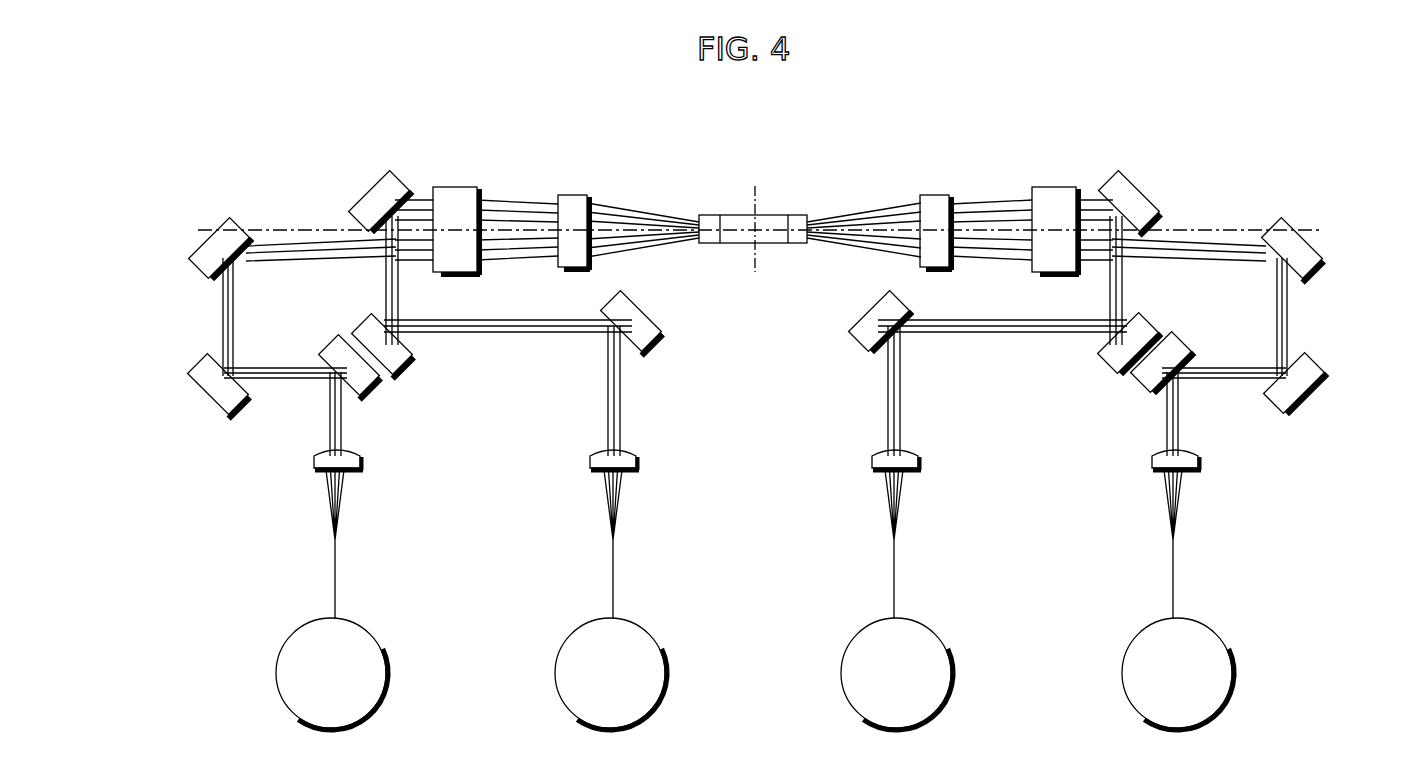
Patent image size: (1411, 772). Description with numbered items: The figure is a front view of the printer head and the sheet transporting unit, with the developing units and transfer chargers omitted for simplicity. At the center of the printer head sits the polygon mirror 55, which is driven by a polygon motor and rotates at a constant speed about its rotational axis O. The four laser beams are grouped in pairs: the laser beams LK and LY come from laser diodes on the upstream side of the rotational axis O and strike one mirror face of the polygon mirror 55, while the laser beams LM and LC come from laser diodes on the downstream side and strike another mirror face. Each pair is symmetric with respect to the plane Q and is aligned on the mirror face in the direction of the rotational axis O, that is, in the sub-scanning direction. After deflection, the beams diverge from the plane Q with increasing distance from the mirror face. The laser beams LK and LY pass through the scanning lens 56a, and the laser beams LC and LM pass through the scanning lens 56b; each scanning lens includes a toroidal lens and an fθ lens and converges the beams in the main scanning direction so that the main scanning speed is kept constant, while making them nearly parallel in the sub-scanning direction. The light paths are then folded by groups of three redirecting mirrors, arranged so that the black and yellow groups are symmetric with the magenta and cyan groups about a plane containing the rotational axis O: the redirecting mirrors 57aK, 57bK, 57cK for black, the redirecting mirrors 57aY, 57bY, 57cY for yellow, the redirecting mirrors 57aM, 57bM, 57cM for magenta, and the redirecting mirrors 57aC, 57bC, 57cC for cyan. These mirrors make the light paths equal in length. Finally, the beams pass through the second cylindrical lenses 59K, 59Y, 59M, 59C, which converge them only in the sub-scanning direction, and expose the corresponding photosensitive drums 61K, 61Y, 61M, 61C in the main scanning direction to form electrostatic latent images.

The polygon mirror 55 is at (773, 212).
The rotational axis O is at (754, 201).
The plane Q is at (281, 232).
The scanning lens 56a is at (1046, 186).
The scanning lens 56b is at (570, 194).
The redirecting mirror 57aM is at (366, 190).
The redirecting mirror 57aC is at (212, 273).
The redirecting mirror 57bC is at (207, 388).
The redirecting mirror 57cC is at (330, 352).
The redirecting mirror 57bM is at (390, 362).
The redirecting mirror 57cM is at (650, 346).
The redirecting mirror 57cY is at (856, 342).
The redirecting mirror 57aY is at (1146, 199).
The redirecting mirror 57bY is at (1114, 358).
The redirecting mirror 57aK is at (1313, 268).
The redirecting mirror 57bK is at (1313, 394).
The redirecting mirror 57cK is at (1183, 347).
The second cylindrical lens 59C is at (353, 455).
The second cylindrical lens 59M is at (633, 455).
The second cylindrical lens 59Y is at (877, 453).
The second cylindrical lens 59K is at (1153, 453).
The laser beam LC is at (336, 584).
The laser beam LM is at (614, 583).
The laser beam LY is at (893, 583).
The laser beam LK is at (1172, 584).
The photosensitive drum 61C is at (332, 674).
The photosensitive drum 61M is at (611, 674).
The photosensitive drum 61Y is at (897, 674).
The photosensitive drum 61K is at (1178, 674).